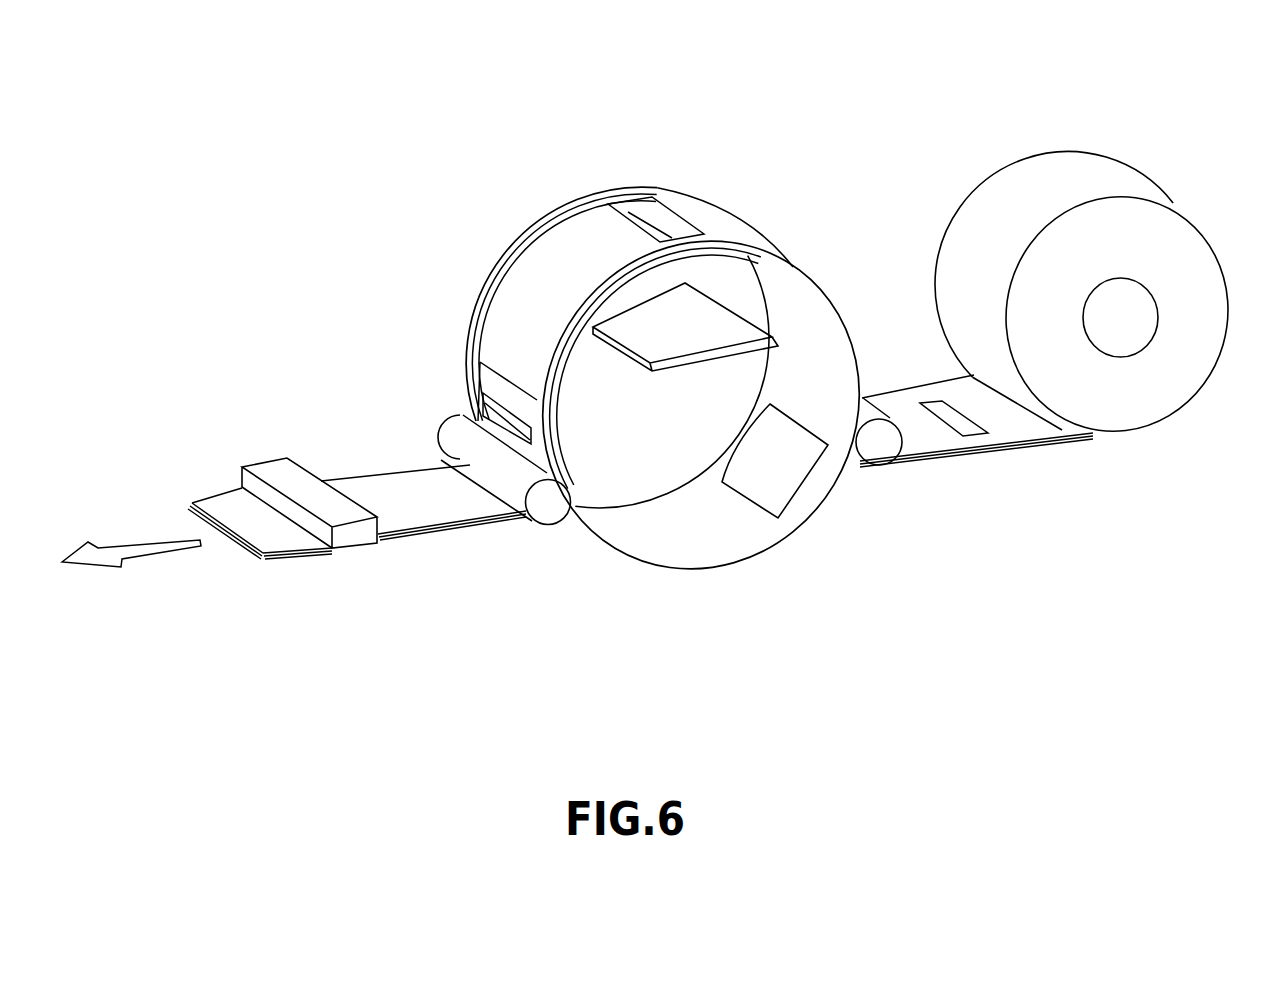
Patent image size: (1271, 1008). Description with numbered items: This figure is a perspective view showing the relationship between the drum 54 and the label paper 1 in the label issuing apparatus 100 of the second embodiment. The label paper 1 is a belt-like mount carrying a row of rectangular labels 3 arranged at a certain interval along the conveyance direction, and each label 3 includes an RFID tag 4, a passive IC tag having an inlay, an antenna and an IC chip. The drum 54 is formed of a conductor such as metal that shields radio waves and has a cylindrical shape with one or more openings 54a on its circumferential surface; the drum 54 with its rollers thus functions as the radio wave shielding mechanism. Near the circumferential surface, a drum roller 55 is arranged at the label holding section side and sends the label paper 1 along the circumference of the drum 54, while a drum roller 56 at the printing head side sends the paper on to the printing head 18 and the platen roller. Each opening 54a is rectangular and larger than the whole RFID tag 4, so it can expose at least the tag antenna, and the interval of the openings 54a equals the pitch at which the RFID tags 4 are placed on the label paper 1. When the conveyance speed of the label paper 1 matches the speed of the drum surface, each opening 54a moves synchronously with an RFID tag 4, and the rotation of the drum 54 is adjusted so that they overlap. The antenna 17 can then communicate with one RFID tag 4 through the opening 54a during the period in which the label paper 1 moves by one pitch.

The label issuing apparatus 100 is at (320, 131).
The label paper 1 is at (1018, 182).
The label 3 is at (557, 250).
The RFID tag 4 is at (618, 203).
The antenna 17 is at (677, 370).
The printing head 18 is at (277, 470).
The drum 54 is at (690, 552).
The opening 54a is at (792, 475).
The drum roller 55 is at (550, 515).
The drum roller 56 is at (889, 448).